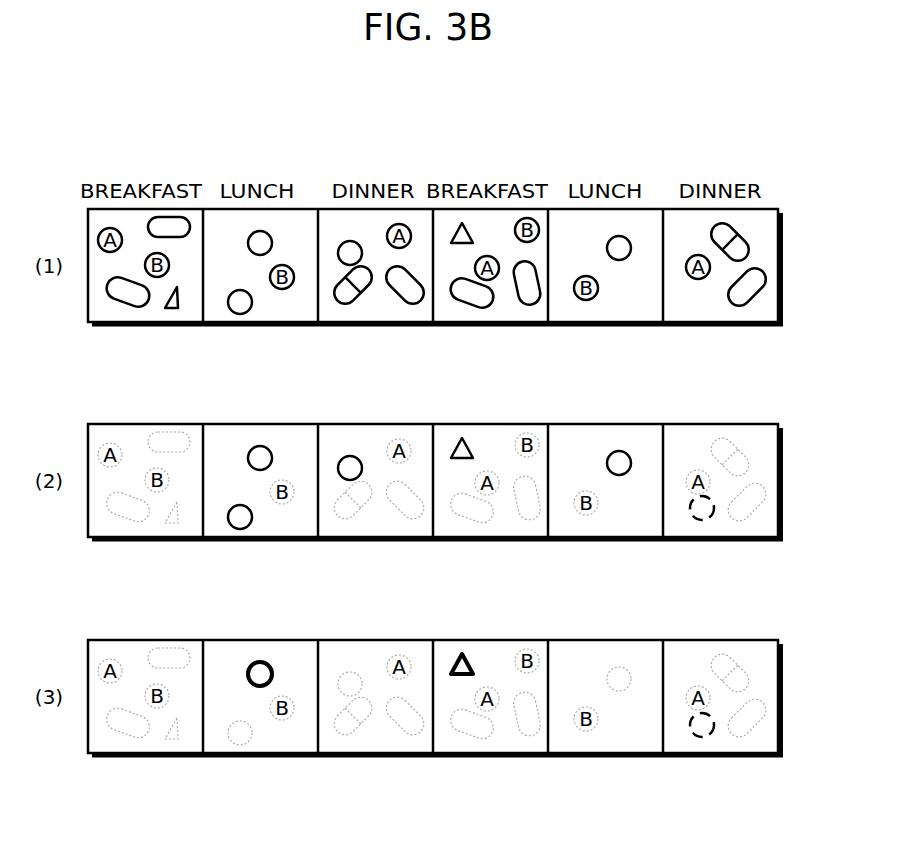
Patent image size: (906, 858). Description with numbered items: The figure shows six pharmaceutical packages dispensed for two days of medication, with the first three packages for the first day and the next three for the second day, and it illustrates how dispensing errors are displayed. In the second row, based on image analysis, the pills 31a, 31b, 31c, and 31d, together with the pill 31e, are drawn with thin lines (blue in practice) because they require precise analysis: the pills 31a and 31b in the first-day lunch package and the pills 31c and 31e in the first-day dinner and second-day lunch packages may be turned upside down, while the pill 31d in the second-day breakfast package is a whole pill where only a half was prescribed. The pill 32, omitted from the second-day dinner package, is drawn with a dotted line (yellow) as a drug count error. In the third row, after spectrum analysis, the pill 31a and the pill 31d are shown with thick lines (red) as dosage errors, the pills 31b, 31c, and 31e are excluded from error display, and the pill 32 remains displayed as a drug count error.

The pill 31a is at (260, 446).
The pill 31b is at (240, 529).
The pill 31c is at (350, 456).
The pill 31d is at (462, 438).
The pill 31e is at (619, 451).
The pill 32 is at (703, 520).